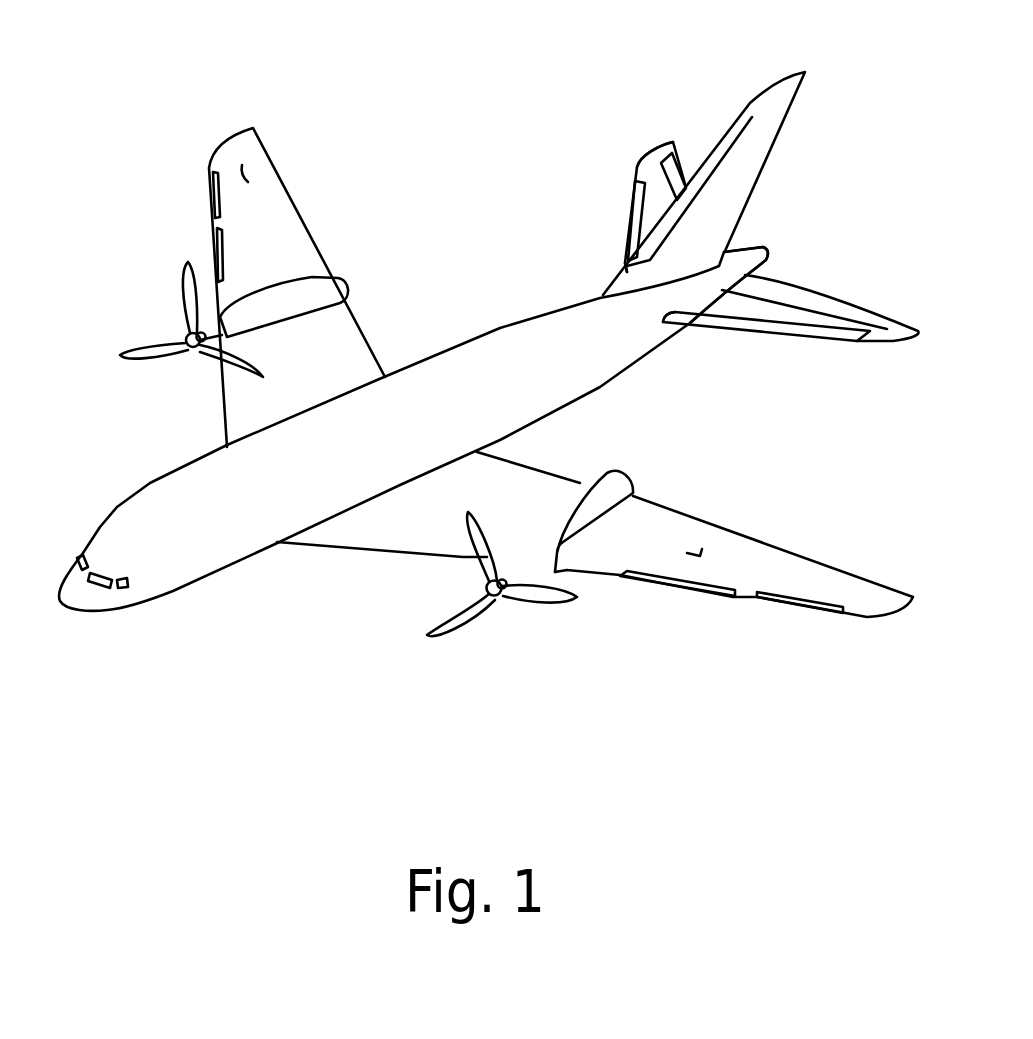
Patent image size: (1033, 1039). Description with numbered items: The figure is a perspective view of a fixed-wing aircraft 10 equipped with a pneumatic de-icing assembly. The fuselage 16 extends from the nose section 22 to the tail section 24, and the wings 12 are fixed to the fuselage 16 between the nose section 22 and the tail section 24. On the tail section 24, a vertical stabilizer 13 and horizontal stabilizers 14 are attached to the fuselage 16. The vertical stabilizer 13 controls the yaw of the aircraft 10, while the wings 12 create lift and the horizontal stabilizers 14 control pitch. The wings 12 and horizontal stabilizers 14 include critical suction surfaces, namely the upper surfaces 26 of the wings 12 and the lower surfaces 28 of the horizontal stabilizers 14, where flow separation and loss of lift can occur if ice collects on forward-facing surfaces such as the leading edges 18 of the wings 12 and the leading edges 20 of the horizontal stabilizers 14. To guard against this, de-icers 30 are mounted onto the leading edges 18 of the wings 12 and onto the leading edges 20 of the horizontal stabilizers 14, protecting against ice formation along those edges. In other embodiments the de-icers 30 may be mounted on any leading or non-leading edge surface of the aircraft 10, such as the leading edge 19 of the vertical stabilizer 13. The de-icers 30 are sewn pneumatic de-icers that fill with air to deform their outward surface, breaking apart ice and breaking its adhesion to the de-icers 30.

The aircraft 10 is at (440, 96).
The wings 12 is at (303, 211).
The vertical stabilizer 13 is at (788, 120).
The horizontal stabilizers 14 is at (682, 167).
The fuselage 16 is at (474, 340).
The leading edges of wings 18 is at (225, 408).
The leading edge of vertical stabilizer 19 is at (627, 272).
The leading edges of horizontal stabilizers 20 is at (637, 175).
The nose section 22 is at (163, 522).
The tail section 24 is at (764, 248).
The upper surfaces of wings 26 is at (246, 172).
The lower surfaces of horizontal stabilizers 28 is at (655, 168).
The de-icers 30 is at (210, 250).